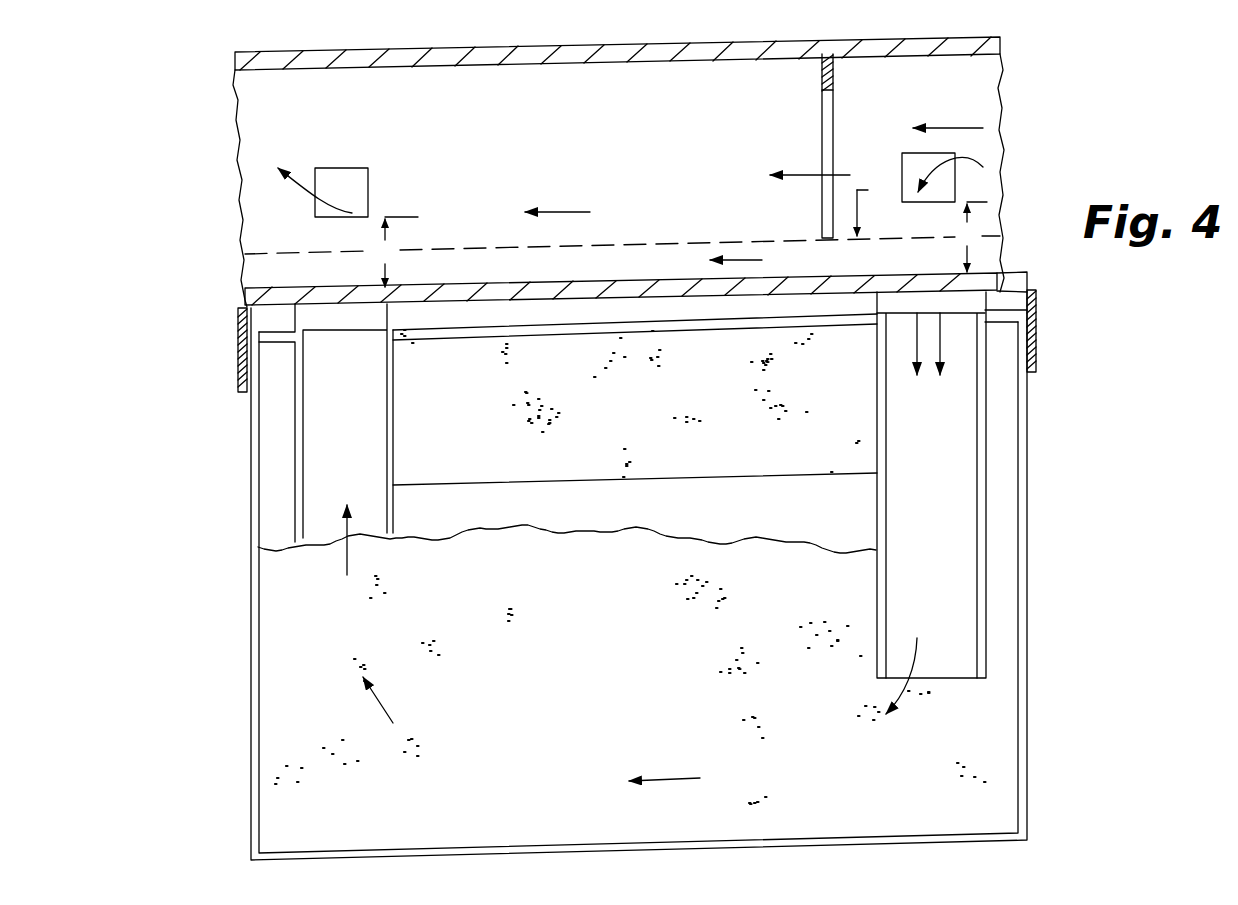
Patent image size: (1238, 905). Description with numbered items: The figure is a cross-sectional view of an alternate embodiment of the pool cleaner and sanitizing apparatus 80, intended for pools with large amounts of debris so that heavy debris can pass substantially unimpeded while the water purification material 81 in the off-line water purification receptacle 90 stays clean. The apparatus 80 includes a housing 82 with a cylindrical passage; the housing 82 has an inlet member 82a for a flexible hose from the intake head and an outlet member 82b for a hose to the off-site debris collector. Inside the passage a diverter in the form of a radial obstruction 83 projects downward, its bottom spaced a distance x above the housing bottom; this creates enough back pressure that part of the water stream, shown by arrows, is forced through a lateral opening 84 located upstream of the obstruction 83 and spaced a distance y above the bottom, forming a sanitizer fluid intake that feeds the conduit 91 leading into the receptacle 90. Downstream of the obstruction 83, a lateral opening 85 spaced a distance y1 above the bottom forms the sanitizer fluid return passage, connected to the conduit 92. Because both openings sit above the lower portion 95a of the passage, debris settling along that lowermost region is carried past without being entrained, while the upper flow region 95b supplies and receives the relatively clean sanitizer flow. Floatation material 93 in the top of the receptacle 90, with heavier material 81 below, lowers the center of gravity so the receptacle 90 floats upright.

The pool cleaner and sanitizing apparatus 80 is at (724, 33).
The water purification material 81 is at (603, 620).
The housing 82 is at (912, 40).
The inlet member 82a is at (1000, 40).
The outlet member 82b is at (235, 60).
The radial obstruction 83 is at (832, 54).
The lateral opening 84 is at (955, 160).
The lateral opening 85 is at (350, 168).
The off-line water purification receptacle 90 is at (1027, 525).
The conduit 91 is at (1036, 330).
The conduit 92 is at (277, 450).
The floatation material 93 is at (630, 424).
The lower portion of cylindrical passage 95a is at (585, 277).
The upper flow passage 95b is at (597, 146).